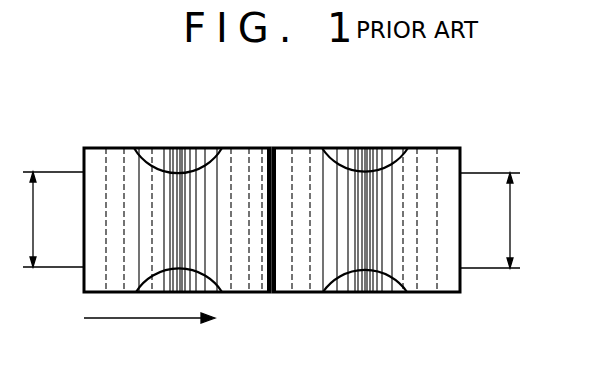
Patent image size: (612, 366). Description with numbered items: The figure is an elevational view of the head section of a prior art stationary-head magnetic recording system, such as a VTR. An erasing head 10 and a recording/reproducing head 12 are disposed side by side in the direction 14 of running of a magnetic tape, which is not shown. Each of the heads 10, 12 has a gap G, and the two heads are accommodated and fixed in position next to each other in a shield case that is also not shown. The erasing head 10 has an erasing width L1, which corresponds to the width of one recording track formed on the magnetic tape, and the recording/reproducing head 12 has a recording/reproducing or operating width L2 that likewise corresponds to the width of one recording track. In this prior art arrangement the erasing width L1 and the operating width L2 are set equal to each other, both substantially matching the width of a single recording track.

The erasing head 10 is at (103, 148).
The recording/reproducing head 12 is at (439, 148).
The direction of running of a magnetic tape 14 is at (150, 319).
The gap G is at (362, 220).
The erasing width L1 is at (51, 219).
The operating width L2 is at (490, 220).